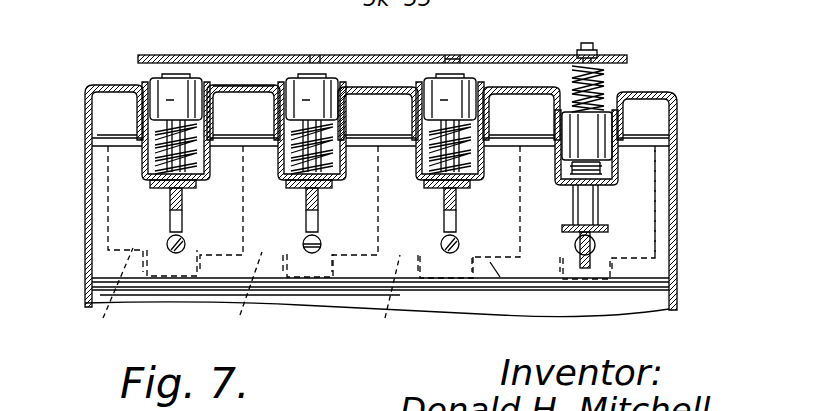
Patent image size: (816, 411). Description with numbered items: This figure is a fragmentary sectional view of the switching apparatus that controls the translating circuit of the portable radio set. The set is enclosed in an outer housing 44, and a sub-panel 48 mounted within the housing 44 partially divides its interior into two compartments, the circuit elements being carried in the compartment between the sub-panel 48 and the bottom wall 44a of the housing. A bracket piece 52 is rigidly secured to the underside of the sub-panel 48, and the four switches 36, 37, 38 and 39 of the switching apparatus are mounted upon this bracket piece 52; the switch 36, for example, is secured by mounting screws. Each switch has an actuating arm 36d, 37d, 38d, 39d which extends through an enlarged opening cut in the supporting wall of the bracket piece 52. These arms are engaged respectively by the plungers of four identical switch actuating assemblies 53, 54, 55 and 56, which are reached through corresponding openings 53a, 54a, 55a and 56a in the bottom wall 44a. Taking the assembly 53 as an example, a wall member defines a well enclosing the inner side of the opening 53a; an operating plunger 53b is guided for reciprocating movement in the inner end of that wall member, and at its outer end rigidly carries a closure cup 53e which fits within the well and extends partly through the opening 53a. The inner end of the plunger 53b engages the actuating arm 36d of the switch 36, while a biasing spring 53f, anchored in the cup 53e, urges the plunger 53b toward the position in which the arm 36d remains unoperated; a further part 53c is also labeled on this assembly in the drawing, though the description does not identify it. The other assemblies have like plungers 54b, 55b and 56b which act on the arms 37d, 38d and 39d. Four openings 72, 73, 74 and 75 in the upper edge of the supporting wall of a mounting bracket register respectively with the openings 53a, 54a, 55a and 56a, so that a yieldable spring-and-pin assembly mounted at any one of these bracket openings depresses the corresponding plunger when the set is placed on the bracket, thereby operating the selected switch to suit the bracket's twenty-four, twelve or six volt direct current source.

The switch 36 is at (663, 225).
The actuating arm 36d is at (593, 235).
The switch 37 is at (399, 299).
The actuating arm 37d is at (425, 220).
The switch 38 is at (247, 296).
The actuating arm 38d is at (287, 220).
The switch 39 is at (110, 297).
The actuating arm 39d is at (149, 220).
The housing 44 is at (85, 205).
The bottom wall 44a is at (233, 85).
The sub-panel 48 is at (645, 302).
The bracket piece 52 is at (647, 274).
The switch actuating assembly 53 is at (625, 127).
The opening 53a is at (607, 97).
The operating plunger 53b is at (573, 200).
The flange 53c is at (563, 228).
The closure cup 53e is at (613, 152).
The biasing spring 53f is at (572, 170).
The switch actuating assembly 54 is at (474, 135).
The opening 54a is at (480, 77).
The plunger 54b is at (429, 165).
The switch actuating assembly 55 is at (331, 135).
The opening 55a is at (337, 76).
The plunger 55b is at (290, 166).
The switch actuating assembly 56 is at (194, 135).
The opening 56a is at (199, 72).
The plunger 56b is at (117, 147).
The opening 72 is at (603, 58).
The opening 73 is at (452, 58).
The opening 74 is at (317, 53).
The opening 75 is at (178, 55).